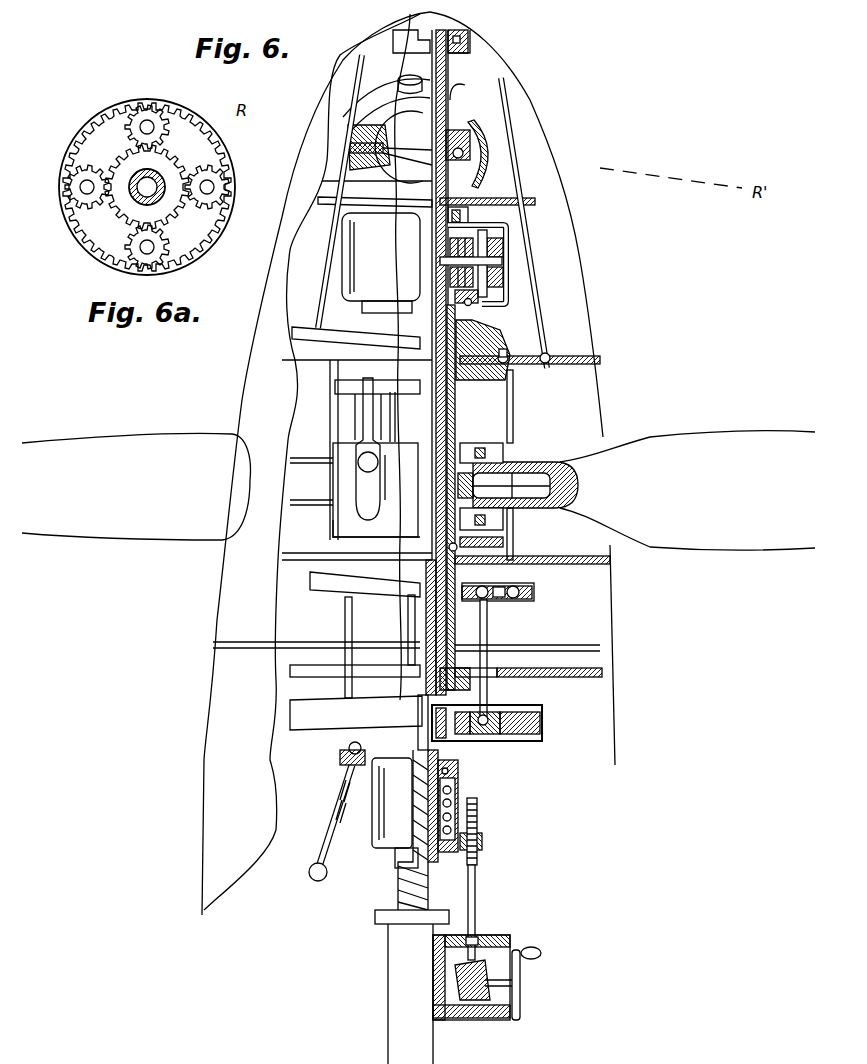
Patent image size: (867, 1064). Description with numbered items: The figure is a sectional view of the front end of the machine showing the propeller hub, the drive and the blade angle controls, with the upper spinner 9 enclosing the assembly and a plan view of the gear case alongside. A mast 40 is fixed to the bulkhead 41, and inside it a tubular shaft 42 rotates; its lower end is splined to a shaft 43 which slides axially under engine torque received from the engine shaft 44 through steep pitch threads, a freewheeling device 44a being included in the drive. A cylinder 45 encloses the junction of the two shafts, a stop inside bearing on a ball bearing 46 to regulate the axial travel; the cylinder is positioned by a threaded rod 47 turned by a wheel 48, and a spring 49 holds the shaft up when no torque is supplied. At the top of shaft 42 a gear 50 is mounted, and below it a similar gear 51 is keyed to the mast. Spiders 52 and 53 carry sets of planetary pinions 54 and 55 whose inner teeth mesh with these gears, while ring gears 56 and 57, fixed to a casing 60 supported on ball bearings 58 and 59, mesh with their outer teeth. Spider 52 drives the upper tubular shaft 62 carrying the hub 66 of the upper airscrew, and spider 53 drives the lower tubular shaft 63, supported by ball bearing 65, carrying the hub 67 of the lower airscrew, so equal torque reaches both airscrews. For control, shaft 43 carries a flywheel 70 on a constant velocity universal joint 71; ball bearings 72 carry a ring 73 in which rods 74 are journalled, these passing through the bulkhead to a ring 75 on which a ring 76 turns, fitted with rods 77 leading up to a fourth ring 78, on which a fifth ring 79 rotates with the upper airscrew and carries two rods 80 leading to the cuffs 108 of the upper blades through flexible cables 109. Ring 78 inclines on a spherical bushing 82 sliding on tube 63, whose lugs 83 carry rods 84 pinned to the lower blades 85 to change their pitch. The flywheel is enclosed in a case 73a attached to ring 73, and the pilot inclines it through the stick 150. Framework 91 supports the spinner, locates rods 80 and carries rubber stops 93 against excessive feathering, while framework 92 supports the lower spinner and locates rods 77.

In FIG. 6, the upper spinner 9 is at (534, 101).
In FIG. 6, the mast 40 is at (456, 633).
In FIG. 6, the bulkhead 41 is at (602, 656).
In FIG. 6, the tubular shaft 42 is at (447, 628).
In FIG. 6A, the tubular shaft 42 is at (160, 204).
In FIG. 6, the shaft 43 is at (420, 720).
In FIG. 6, the engine shaft 44 is at (477, 900).
In FIG. 6, the freewheeling device 44a is at (452, 920).
In FIG. 6, the cylinder 45 is at (480, 812).
In FIG. 6, the ball bearing 46 is at (460, 779).
In FIG. 6, the threaded rod 47 is at (480, 857).
In FIG. 6, the wheel 48 is at (530, 968).
In FIG. 6, the spring 49 is at (484, 841).
In FIG. 6, the gear 50 is at (440, 260).
In FIG. 6A, the gear 50 is at (178, 213).
In FIG. 6, the gear 51 is at (450, 279).
In FIG. 6, the spider 52 is at (504, 233).
In FIG. 6, the spider 53 is at (508, 290).
In FIG. 6, the planetary pinions 54 is at (504, 249).
In FIG. 6A, the planetary pinions 54 is at (216, 188).
In FIG. 6, the planetary pinions 55 is at (507, 263).
In FIG. 6, the ring gear 56 is at (516, 246).
In FIG. 6A, the ring gear 56 is at (232, 198).
In FIG. 6, the ring gear 57 is at (511, 271).
In FIG. 6, the ball bearing 58 is at (522, 178).
In FIG. 6, the ball bearing 59 is at (512, 311).
In FIG. 6, the casing 60 is at (521, 300).
In FIG. 6, the upper tubular shaft 62 is at (456, 70).
In FIG. 6, the lower tubular shaft 63 is at (457, 424).
In FIG. 6, the ball bearing 65 is at (470, 548).
In FIG. 6, the hub 66 is at (352, 172).
In FIG. 6, the hub 67 is at (333, 530).
In FIG. 6, the flywheel 70 is at (546, 723).
In FIG. 6, the constant velocity universal joint 71 is at (440, 740).
In FIG. 6, the ball bearings 72 is at (471, 713).
In FIG. 6, the ring 73 is at (502, 716).
In FIG. 6, the case 73a is at (544, 740).
In FIG. 6, the rods 74 is at (488, 646).
In FIG. 6, the ring 75 is at (468, 590).
In FIG. 6, the ring 76 is at (536, 594).
In FIG. 6, the rods 77 is at (516, 446).
In FIG. 6, the ring 78 is at (492, 346).
In FIG. 6, the ring 79 is at (562, 356).
In FIG. 6, the rods 80 is at (505, 152).
In FIG. 6, the spherical bushing 82 is at (386, 336).
In FIG. 6, the lugs 83 is at (356, 387).
In FIG. 6, the rods 84 is at (363, 412).
In FIG. 6, the blades 85 is at (183, 548).
In FIG. 6, the framework 91 is at (556, 196).
In FIG. 6, the framework 92 is at (600, 566).
In FIG. 6, the rubber stops 93 is at (552, 152).
In FIG. 6, the cuff 108 is at (375, 108).
In FIG. 6, the flexible cables 109 is at (408, 88).
In FIG. 6, the stick 150 is at (340, 773).